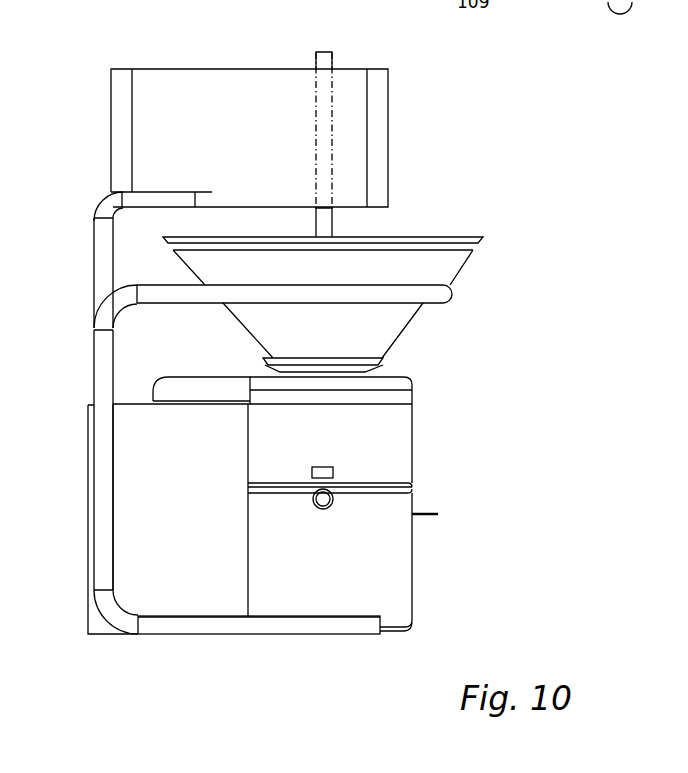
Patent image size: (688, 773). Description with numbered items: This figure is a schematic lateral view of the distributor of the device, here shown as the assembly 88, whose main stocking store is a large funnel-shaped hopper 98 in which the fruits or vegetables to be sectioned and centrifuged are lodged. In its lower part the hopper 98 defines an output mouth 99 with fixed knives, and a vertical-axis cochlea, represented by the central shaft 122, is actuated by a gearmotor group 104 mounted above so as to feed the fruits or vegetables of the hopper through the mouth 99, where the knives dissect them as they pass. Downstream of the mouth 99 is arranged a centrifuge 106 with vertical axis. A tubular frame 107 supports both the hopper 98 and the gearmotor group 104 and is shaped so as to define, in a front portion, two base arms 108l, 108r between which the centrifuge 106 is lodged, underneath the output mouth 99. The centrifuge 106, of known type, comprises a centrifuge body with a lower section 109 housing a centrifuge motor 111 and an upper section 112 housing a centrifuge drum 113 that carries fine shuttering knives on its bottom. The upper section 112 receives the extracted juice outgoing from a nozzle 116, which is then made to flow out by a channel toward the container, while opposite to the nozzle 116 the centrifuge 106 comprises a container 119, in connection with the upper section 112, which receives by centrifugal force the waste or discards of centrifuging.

The beverage preparation apparatus 88 is at (497, 203).
The hopper 98 is at (452, 268).
The output mouth 99 is at (357, 369).
The gearmotor group 104 is at (187, 72).
The centrifuge 106 is at (473, 482).
The tubular frame 107 is at (102, 373).
The base arm 108l is at (259, 654).
The base arm 108r is at (215, 623).
The lower section 109 is at (400, 567).
The centrifuge motor 111 is at (272, 563).
The upper section 112 is at (255, 458).
The centrifuge drum 113 is at (388, 453).
The nozzle 116 is at (315, 470).
The container 119 is at (167, 500).
The drive shaft 122 is at (323, 222).